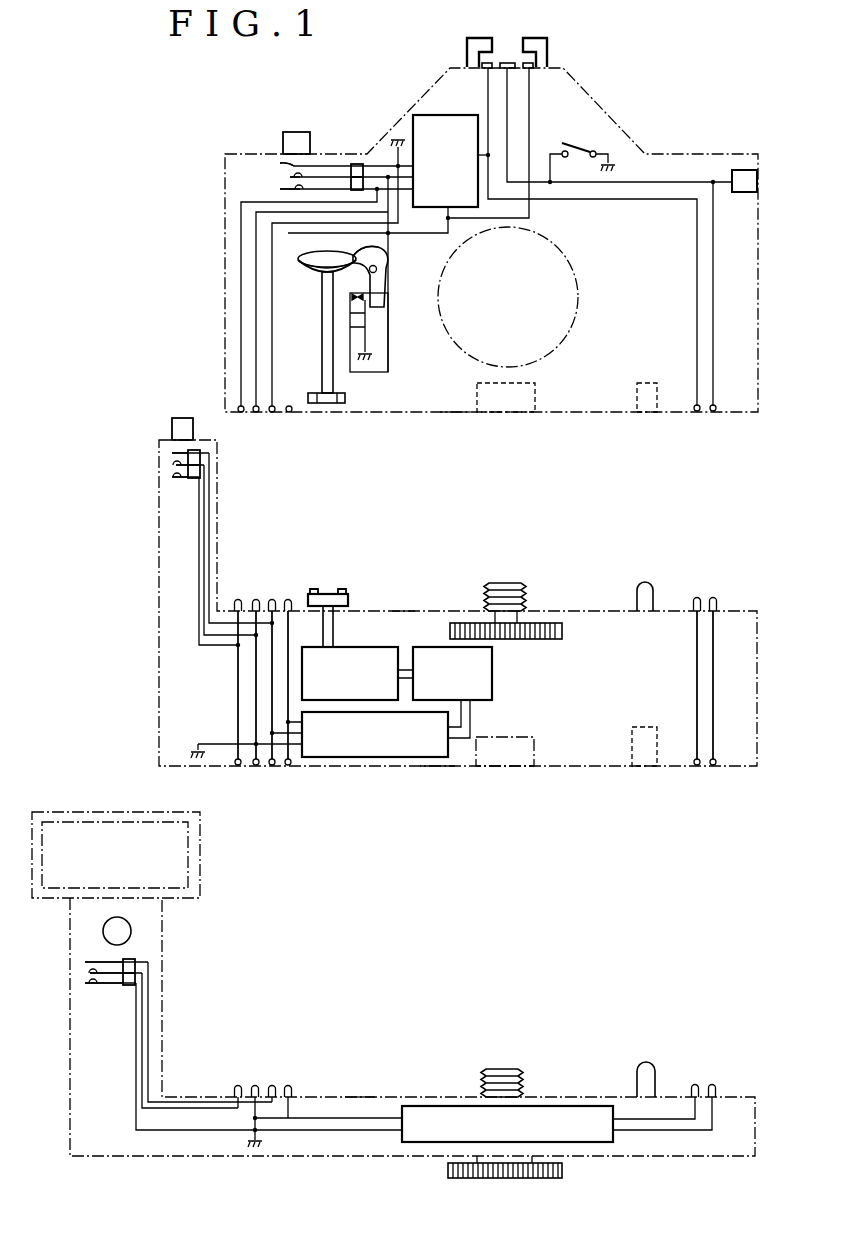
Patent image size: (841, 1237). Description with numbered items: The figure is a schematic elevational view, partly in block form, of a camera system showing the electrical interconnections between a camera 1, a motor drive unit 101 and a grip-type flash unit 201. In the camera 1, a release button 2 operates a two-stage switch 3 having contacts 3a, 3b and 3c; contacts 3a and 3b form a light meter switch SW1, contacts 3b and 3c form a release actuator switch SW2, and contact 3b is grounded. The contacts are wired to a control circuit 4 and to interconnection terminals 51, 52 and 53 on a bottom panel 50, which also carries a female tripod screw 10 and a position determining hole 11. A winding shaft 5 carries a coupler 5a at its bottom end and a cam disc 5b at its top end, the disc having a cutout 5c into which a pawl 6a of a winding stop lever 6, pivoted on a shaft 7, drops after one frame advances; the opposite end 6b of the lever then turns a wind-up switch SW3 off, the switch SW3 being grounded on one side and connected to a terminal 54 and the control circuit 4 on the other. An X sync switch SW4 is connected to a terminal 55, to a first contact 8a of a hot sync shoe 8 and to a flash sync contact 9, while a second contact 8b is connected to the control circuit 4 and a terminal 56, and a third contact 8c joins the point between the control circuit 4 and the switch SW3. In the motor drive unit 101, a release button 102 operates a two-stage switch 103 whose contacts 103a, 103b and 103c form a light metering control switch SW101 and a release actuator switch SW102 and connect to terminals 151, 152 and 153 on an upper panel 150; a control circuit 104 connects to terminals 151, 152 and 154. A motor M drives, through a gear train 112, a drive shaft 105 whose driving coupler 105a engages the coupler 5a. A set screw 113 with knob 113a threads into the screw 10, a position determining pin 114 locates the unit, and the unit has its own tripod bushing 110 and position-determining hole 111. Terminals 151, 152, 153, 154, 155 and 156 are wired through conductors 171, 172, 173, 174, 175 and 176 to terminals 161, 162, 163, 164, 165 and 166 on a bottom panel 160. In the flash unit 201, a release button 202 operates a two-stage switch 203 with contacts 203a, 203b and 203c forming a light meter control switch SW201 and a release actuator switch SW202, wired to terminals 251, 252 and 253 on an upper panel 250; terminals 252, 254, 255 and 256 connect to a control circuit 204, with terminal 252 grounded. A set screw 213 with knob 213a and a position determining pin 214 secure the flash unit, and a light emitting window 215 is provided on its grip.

The camera 1 is at (666, 147).
The release button 2 is at (293, 132).
The two-stage switch 3 is at (240, 181).
The contact 3a is at (280, 165).
The contact 3b is at (290, 177).
The contact 3c is at (280, 189).
The light meter switch SW1 is at (353, 170).
The release actuator switch SW2 is at (356, 184).
The control circuit 4 is at (455, 115).
The winding shaft 5 is at (322, 359).
The coupler 5a is at (330, 405).
The cam disc 5b is at (318, 268).
The cutout 5c is at (327, 261).
The winding stop lever 6 is at (384, 264).
The pawl 6a is at (354, 254).
The opposite end 6b is at (362, 312).
The shaft 7 is at (378, 272).
The wind-up switch SW3 is at (353, 292).
The X sync switch SW4 is at (570, 147).
The hot sync shoe 8 is at (545, 41).
The first contact 8a is at (507, 62).
The second contact 8b is at (488, 62).
The third contact 8c is at (530, 62).
The flash sync contact 9 is at (742, 195).
The female screw 10 is at (510, 413).
The position determining hole 11 is at (646, 413).
The bottom panel 50 is at (455, 413).
The interconnection terminal 51 is at (272, 413).
The interconnection terminal 52 is at (256, 413).
The interconnection terminal 53 is at (241, 413).
The interconnection terminal 54 is at (289, 413).
The terminal 55 is at (714, 412).
The terminal 56 is at (697, 412).
The motor drive unit 101 is at (545, 594).
The release button 102 is at (183, 418).
The two-stage switch 103 is at (180, 480).
The contact 103a is at (172, 453).
The contact 103b is at (176, 465).
The contact 103c is at (176, 477).
The light metering control switch SW101 is at (203, 456).
The release actuator switch SW102 is at (200, 476).
The control circuit 104 is at (370, 757).
The drive shaft 105 is at (333, 630).
The driving coupler 105a is at (328, 592).
The tripod bushing 110 is at (508, 767).
The position-determining hole 111 is at (643, 767).
The gear train 112 is at (390, 653).
The set screw 113 is at (505, 583).
The knob 113a is at (456, 622).
The position determining pin 114 is at (643, 583).
The motor M is at (492, 670).
The upper panel 150 is at (401, 610).
The interconnection terminal 151 is at (272, 599).
The interconnection terminal 152 is at (256, 599).
The interconnection terminal 153 is at (238, 599).
The interconnection terminal 154 is at (288, 599).
The terminal 155 is at (713, 598).
The terminal 156 is at (696, 598).
The bottom panel 160 is at (437, 767).
The interconnection terminal 161 is at (272, 766).
The interconnection terminal 162 is at (256, 766).
The interconnection terminal 163 is at (238, 766).
The interconnection terminal 164 is at (288, 766).
The interconnection terminal 165 is at (713, 766).
The interconnection terminal 166 is at (696, 766).
The electrically conductive wire 171 is at (272, 680).
The electrically conductive wire 172 is at (256, 702).
The electrically conductive wire 173 is at (238, 725).
The electrically conductive wire 174 is at (287, 657).
The electrically conductive wire 175 is at (714, 652).
The electrically conductive wire 176 is at (697, 678).
The flash unit 201 is at (473, 1051).
The release button 202 is at (131, 929).
The two-stage switch 203 is at (105, 985).
The contact 203a is at (85, 962).
The contact 203b is at (89, 973).
The contact 203c is at (85, 983).
The light meter control switch SW201 is at (138, 963).
The release actuator switch SW202 is at (136, 981).
The control circuit 204 is at (556, 1105).
The set screw 213 is at (480, 1076).
The knob 213a is at (563, 1176).
The position determining pin 214 is at (635, 1078).
The light emitting window 215 is at (190, 868).
The upper panel 250 is at (360, 1096).
The interconnection terminal 251 is at (272, 1086).
The interconnection terminal 252 is at (254, 1086).
The interconnection terminal 253 is at (235, 1086).
The interconnection terminal 254 is at (289, 1086).
The interconnection terminal 255 is at (712, 1085).
The interconnection terminal 256 is at (695, 1085).